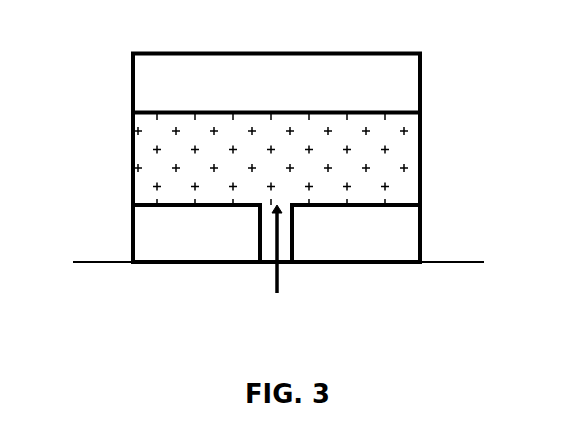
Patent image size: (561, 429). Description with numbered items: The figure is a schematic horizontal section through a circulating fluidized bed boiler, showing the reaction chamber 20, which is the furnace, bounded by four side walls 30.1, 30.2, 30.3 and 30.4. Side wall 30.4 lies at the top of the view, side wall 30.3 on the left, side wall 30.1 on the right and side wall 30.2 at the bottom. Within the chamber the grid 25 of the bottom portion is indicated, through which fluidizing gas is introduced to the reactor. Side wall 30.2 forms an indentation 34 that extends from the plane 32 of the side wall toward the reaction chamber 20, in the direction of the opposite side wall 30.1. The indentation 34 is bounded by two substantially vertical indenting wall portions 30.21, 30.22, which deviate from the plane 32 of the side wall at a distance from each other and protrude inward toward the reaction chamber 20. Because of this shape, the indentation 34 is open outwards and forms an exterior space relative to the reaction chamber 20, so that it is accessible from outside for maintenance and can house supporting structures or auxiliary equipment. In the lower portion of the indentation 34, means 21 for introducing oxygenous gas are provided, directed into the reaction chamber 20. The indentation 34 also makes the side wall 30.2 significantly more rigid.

The reaction chamber 20 is at (313, 104).
The means for introducing oxygenous gas 21 is at (278, 276).
The grid 25 is at (402, 181).
The side wall 30.1 is at (422, 140).
The side wall 30.2 is at (365, 263).
The indenting wall portion 30.21 is at (260, 243).
The indenting wall portion 30.22 is at (293, 243).
The side wall 30.3 is at (131, 135).
The side wall 30.4 is at (200, 54).
The plane of the side wall 32 is at (100, 263).
The indentation 34 is at (273, 218).